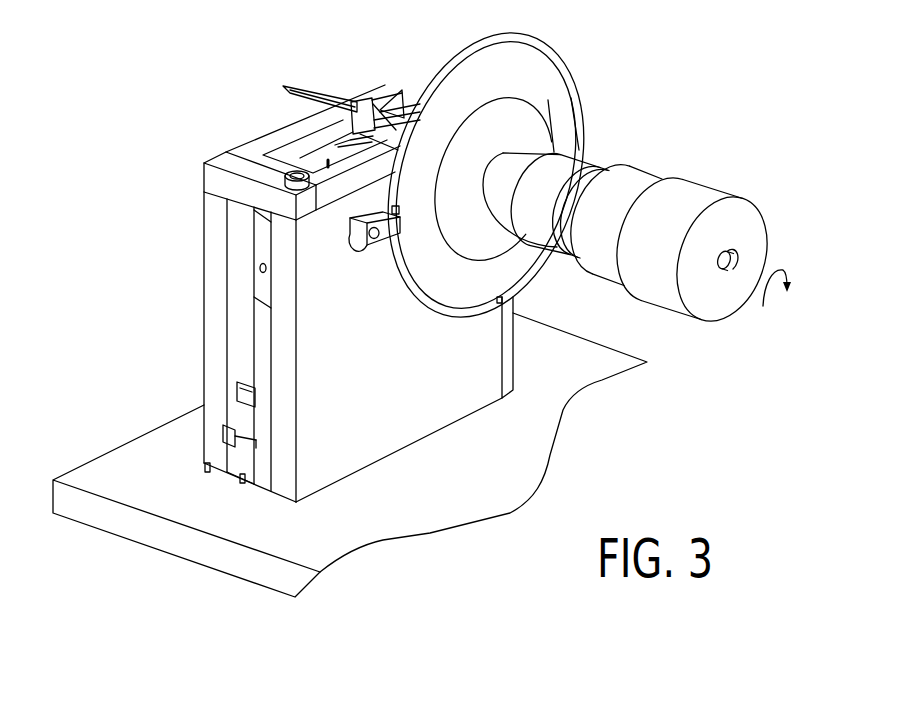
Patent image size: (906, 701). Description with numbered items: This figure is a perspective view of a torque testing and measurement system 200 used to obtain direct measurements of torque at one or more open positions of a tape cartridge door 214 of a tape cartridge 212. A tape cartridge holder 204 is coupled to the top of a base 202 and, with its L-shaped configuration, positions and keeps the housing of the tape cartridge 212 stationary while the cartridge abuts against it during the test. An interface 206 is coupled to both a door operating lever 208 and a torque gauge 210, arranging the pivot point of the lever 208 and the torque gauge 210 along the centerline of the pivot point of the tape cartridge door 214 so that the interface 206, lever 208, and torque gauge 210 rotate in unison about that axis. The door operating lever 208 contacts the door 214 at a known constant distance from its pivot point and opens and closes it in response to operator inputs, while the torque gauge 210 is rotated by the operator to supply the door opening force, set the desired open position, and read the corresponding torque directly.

The torque testing and measurement system 200 is at (200, 106).
The base 202 is at (279, 530).
The tape cartridge holder 204 is at (397, 425).
The interface 206 is at (562, 75).
The door operating lever 208 is at (381, 104).
The torque gauge 210 is at (706, 158).
The tape cartridge 212 is at (213, 275).
The tape cartridge door 214 is at (337, 97).